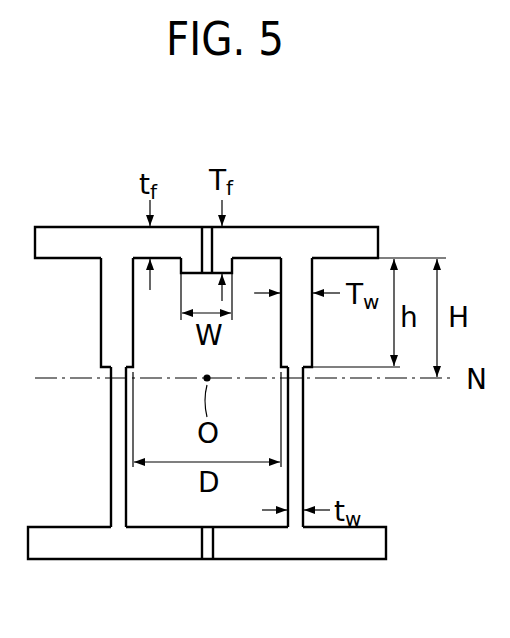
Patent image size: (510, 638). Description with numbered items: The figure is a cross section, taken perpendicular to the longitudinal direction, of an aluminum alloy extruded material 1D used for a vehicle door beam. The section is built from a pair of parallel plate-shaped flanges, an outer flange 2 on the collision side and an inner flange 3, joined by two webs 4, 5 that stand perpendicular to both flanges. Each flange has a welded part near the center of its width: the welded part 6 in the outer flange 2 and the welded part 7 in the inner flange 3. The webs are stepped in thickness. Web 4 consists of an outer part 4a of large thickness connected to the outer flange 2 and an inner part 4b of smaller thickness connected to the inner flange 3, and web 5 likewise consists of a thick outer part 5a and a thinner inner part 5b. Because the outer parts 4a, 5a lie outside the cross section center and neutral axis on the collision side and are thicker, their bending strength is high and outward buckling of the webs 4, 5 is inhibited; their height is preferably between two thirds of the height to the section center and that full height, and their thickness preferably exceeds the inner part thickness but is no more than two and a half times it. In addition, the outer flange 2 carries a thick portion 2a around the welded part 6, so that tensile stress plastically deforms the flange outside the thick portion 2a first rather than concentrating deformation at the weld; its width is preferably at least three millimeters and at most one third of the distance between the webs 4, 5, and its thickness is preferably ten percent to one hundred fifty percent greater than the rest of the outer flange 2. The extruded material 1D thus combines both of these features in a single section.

The aluminum alloy extruded material 1D is at (330, 171).
The outer flange 2 is at (94, 211).
The thick portion 2a is at (190, 263).
The inner flange 3 is at (138, 548).
The web 4 is at (85, 414).
The outer part 4a is at (114, 312).
The inner part 4b is at (114, 490).
The web 5 is at (327, 416).
The outer part 5a is at (293, 353).
The inner part 5b is at (295, 474).
The welded part 6 is at (208, 250).
The welded part 7 is at (208, 548).